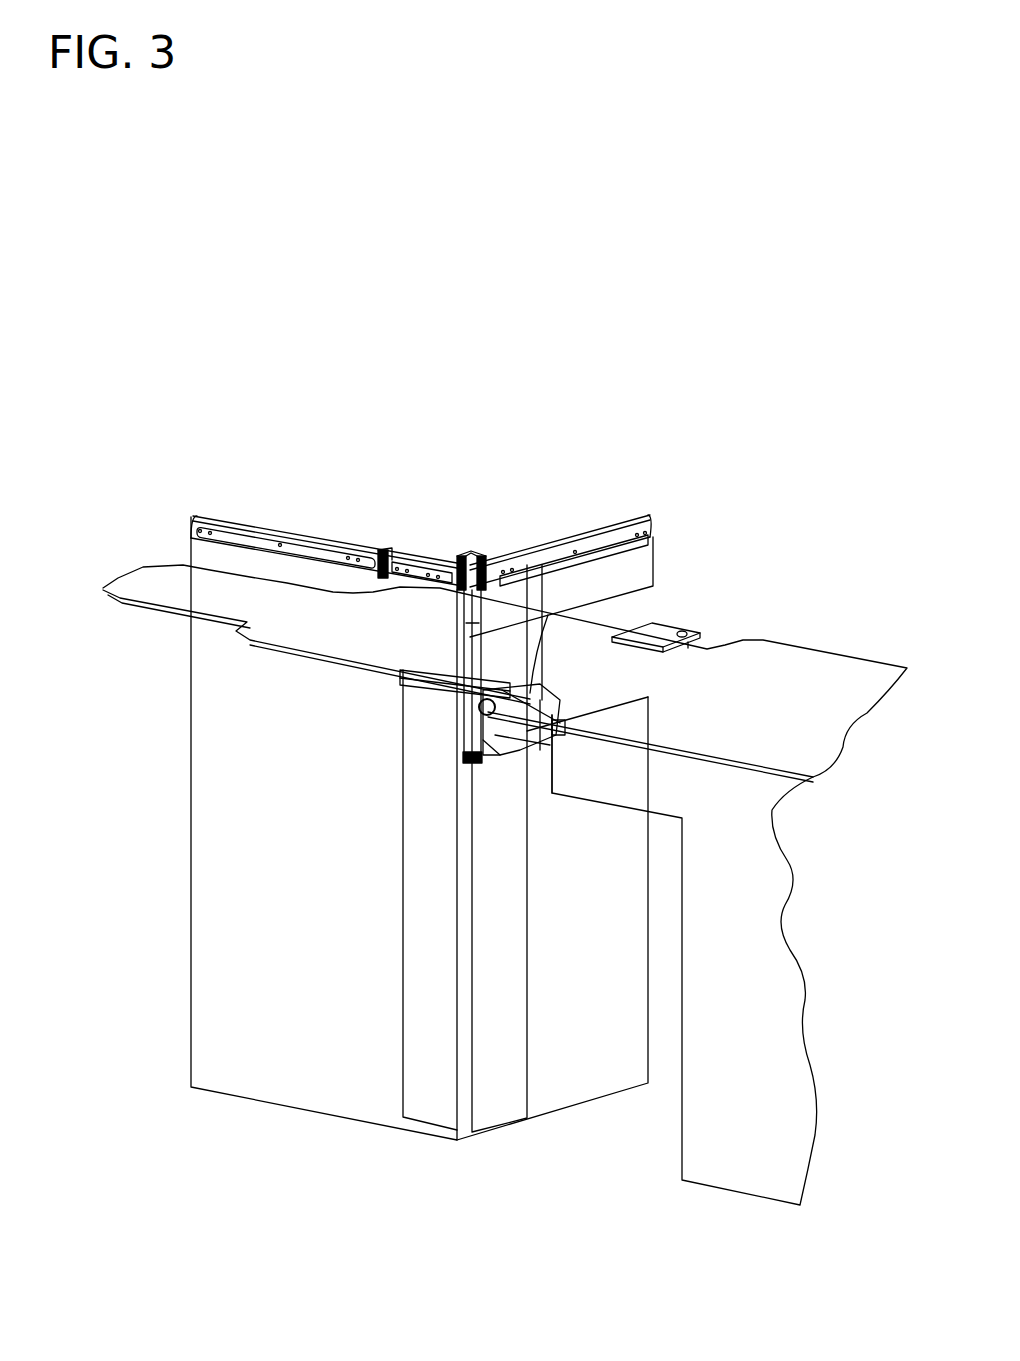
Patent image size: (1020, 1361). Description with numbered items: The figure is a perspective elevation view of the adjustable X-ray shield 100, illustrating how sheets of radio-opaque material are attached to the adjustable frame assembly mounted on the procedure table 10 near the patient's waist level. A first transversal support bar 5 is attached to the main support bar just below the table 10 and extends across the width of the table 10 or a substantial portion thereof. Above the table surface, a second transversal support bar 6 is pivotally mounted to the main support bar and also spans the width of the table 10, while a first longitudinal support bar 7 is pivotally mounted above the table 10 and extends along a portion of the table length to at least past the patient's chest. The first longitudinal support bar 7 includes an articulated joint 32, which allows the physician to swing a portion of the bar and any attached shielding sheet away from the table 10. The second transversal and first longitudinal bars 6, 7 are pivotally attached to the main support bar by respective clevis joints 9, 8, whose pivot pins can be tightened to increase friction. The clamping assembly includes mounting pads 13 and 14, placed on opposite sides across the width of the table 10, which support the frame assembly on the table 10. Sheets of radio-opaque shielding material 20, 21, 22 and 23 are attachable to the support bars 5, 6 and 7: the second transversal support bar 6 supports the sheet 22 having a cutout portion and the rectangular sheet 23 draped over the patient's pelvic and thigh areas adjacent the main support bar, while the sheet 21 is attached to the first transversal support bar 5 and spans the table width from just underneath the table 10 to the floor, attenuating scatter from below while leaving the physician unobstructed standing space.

The adjustable X-ray shield 100 is at (130, 887).
The table 10 is at (807, 685).
The sheet of radio-opaque shielding material 20 is at (215, 803).
The sheet of radio-opaque shielding material 21 is at (557, 1080).
The sheet of radio-opaque shielding material 22 is at (647, 563).
The sheet of radio-opaque shielding material 23 is at (555, 690).
The first transversal support bar 5 is at (543, 748).
The second transversal support bar 6 is at (610, 525).
The first longitudinal support bar 7 is at (255, 525).
The clevis joint 8 is at (458, 560).
The clevis joint 9 is at (482, 560).
The mounting pad 13 is at (442, 672).
The mounting pad 14 is at (662, 623).
The articulated joint 32 is at (380, 550).